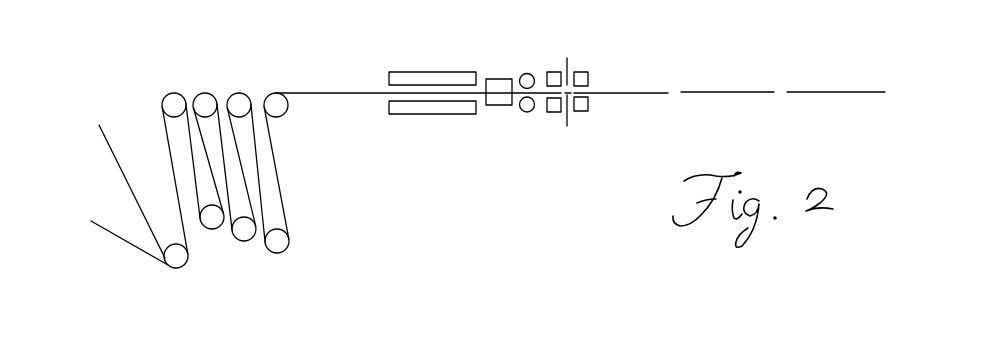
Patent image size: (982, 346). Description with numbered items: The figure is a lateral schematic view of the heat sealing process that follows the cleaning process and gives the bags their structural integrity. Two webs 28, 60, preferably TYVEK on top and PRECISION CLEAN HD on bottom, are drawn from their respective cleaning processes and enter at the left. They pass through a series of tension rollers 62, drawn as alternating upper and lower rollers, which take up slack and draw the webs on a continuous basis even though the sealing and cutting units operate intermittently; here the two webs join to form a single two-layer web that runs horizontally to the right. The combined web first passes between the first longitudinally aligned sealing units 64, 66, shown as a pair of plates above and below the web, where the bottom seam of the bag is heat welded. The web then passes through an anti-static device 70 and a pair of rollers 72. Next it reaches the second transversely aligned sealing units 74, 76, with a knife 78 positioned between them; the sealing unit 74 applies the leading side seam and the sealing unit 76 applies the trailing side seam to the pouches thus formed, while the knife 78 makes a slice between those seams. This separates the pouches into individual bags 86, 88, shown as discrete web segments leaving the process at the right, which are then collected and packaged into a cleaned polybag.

The web 28 is at (95, 112).
The web 60 is at (82, 218).
The tension rollers 62 is at (295, 265).
The first longitudinally aligned sealing unit 64 is at (430, 72).
The first longitudinally aligned sealing unit 66 is at (432, 114).
The anti-static device 70 is at (498, 106).
The rollers 72 is at (527, 73).
The second transversely aligned sealing unit 74 is at (551, 72).
The second transversely aligned sealing unit 76 is at (588, 74).
The knife 78 is at (567, 60).
The individual bag 86 is at (713, 92).
The individual bag 88 is at (808, 92).